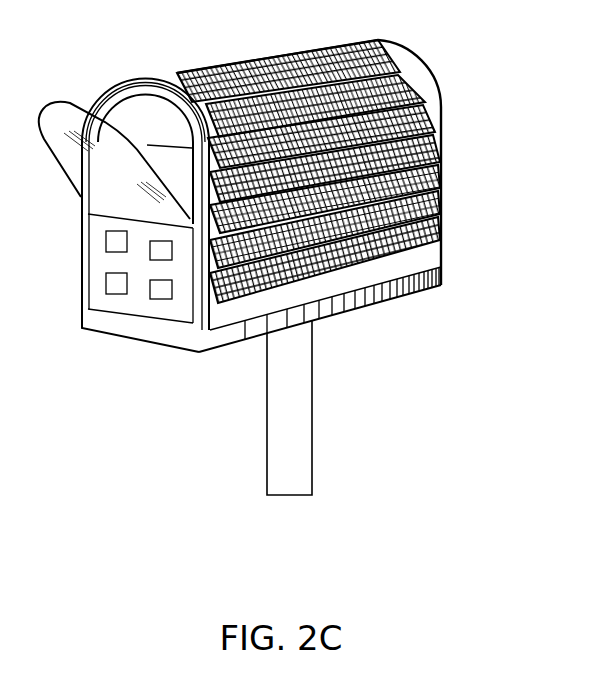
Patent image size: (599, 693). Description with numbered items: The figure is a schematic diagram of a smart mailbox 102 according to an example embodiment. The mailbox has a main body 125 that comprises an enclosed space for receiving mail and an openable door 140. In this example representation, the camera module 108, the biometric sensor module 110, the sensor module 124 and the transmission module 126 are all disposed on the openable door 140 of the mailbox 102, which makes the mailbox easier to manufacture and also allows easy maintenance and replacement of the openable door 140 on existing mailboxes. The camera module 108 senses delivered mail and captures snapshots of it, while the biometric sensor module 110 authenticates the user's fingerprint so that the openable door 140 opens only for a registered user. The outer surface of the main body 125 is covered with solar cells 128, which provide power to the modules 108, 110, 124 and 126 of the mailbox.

The smart mailbox 102 is at (475, 185).
The camera module 108 is at (144, 233).
The biometric sensor module 110 is at (99, 248).
The sensor module 124 is at (99, 290).
The main body 125 is at (441, 134).
The transmission module 126 is at (162, 299).
The solar cells 128 is at (268, 62).
The openable door 140 is at (189, 319).